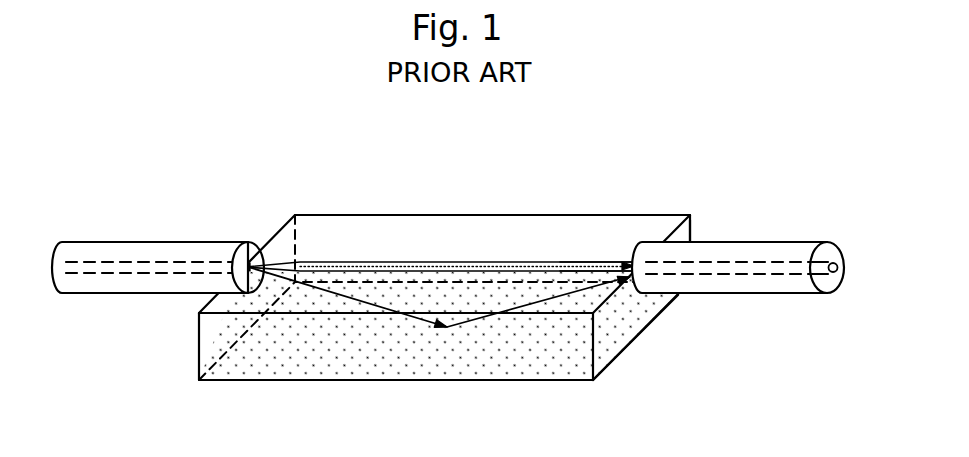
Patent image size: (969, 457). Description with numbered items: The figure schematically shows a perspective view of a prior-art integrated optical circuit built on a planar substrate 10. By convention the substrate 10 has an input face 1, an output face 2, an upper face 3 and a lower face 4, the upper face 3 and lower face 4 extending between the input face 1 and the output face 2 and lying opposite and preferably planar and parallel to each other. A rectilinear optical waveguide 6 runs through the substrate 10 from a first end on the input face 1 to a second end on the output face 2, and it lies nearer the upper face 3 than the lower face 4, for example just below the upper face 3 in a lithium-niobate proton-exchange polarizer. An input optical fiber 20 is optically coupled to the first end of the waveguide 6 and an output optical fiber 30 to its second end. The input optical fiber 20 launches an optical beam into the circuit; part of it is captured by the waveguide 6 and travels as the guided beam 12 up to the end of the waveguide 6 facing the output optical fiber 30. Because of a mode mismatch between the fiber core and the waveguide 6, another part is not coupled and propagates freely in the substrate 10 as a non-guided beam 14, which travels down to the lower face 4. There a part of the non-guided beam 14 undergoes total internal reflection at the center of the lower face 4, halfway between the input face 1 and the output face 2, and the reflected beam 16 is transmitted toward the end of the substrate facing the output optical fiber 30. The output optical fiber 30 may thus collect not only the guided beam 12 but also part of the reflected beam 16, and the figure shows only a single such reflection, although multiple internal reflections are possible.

The input face 1 is at (215, 337).
The output face 2 is at (692, 238).
The upper face 3 is at (432, 218).
The lower face 4 is at (543, 368).
The optical waveguide 6 is at (337, 262).
The substrate 10 is at (653, 217).
The guided beam 12 is at (591, 262).
The non-guided beam 14 is at (322, 289).
The reflected beam 16 is at (600, 296).
The input optical fiber 20 is at (108, 243).
The output optical fiber 30 is at (730, 244).